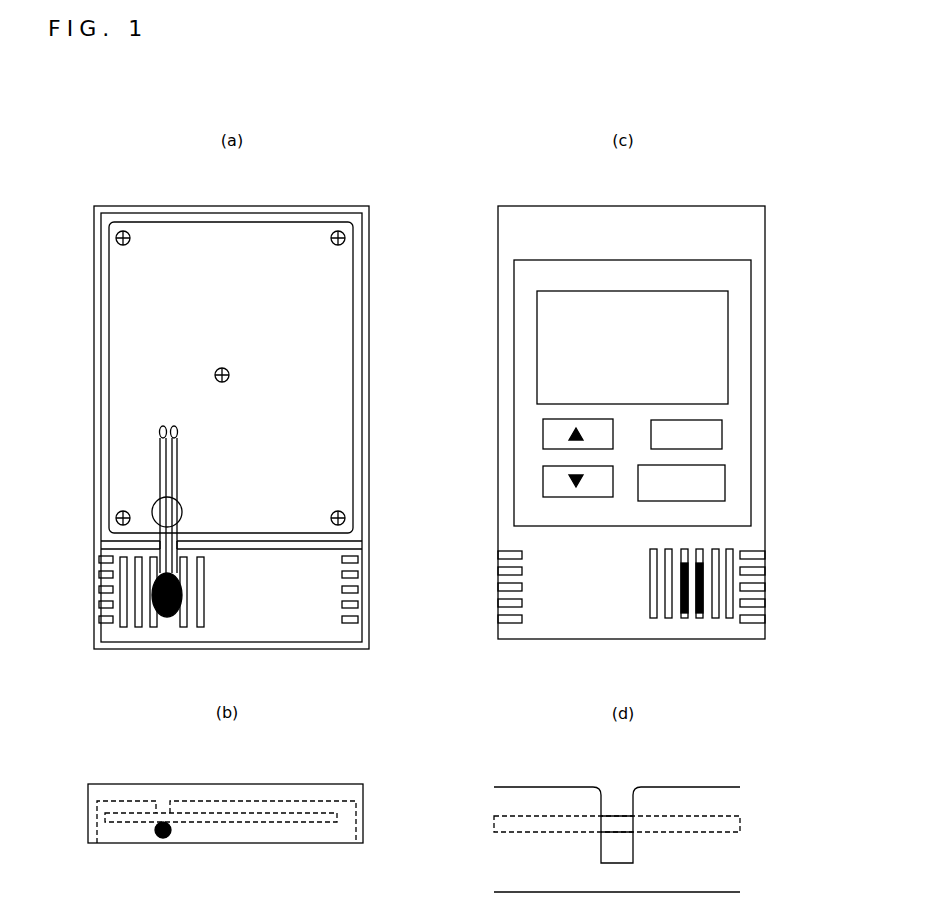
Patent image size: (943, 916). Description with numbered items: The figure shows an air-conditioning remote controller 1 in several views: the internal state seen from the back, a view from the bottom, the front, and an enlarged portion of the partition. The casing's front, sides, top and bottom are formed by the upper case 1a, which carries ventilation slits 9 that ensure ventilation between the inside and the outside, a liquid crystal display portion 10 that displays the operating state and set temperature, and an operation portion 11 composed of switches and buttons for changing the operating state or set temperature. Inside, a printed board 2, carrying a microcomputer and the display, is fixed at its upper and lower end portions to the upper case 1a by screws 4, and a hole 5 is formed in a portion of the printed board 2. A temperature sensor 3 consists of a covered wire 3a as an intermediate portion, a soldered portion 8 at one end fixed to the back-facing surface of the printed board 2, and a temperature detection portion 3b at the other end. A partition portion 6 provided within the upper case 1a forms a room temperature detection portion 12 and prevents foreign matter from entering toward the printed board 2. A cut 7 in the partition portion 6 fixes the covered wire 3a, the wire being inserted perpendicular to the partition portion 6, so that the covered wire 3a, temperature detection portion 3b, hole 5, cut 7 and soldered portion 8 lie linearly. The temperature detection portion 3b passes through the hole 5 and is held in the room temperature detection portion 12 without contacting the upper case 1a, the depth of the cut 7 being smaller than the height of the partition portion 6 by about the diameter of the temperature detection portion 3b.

The air-conditioning remote controller 1 is at (298, 208).
The upper case 1a is at (368, 298).
The printed board 2 is at (230, 313).
The temperature sensor 3 is at (177, 462).
The covered wire 3a is at (177, 482).
The temperature detection portion 3b is at (182, 585).
The screw 4 is at (130, 235).
The hole 5 is at (182, 510).
The partition portion 6 is at (330, 543).
The cut 7 is at (190, 541).
The soldered portion 8 is at (172, 428).
The ventilation slit 9 is at (200, 615).
The liquid crystal display portion 10 is at (729, 359).
The operation portion 11 is at (727, 467).
The room temperature detection portion 12 is at (345, 565).